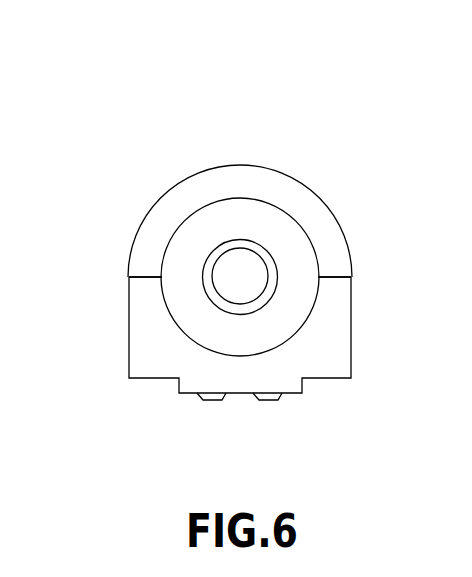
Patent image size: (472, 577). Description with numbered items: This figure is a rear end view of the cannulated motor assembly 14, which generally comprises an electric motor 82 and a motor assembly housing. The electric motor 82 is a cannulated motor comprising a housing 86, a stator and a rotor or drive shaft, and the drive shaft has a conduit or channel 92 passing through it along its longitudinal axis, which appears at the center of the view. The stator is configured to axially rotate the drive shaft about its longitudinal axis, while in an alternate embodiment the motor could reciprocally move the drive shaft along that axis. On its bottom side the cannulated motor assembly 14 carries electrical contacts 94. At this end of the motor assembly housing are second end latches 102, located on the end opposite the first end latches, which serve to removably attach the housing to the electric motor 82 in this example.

The cannulated motor assembly 14 is at (365, 137).
The electric motor 82 is at (243, 215).
The housing 86 is at (351, 365).
The conduit or channel 92 is at (240, 275).
The electrical contacts 94 is at (268, 400).
The second end latches 102 is at (148, 276).